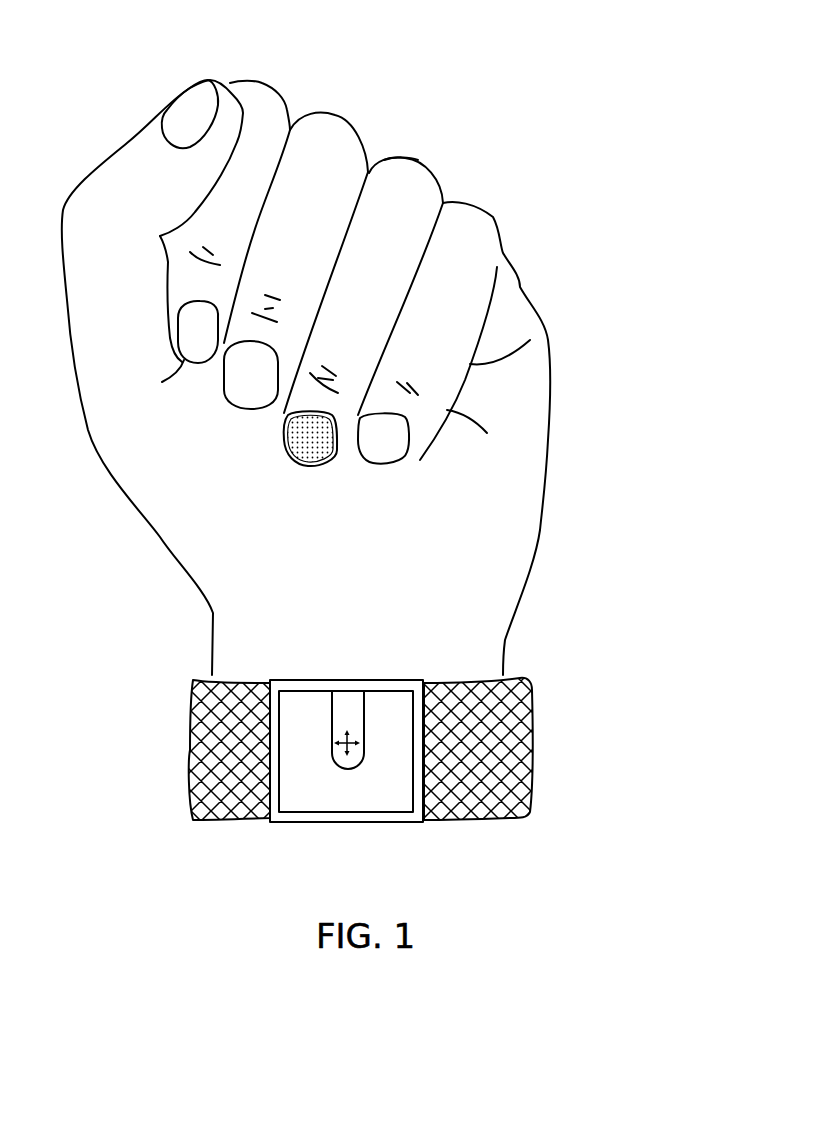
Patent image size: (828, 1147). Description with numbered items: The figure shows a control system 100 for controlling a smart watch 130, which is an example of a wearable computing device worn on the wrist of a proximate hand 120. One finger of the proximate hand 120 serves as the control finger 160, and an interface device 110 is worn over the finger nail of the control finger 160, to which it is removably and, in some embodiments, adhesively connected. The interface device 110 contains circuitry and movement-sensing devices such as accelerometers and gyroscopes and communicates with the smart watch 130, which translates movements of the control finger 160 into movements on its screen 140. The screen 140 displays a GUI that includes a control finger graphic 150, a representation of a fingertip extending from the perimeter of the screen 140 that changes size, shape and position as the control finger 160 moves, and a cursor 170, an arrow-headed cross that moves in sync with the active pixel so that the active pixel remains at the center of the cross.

The control system 100 is at (545, 67).
The interface device 110 is at (337, 440).
The proximate hand 120 is at (457, 527).
The smart watch 130 is at (362, 823).
The screen 140 is at (388, 707).
The control finger graphic 150 is at (332, 708).
The control finger 160 is at (418, 160).
The cursor 170 is at (352, 748).